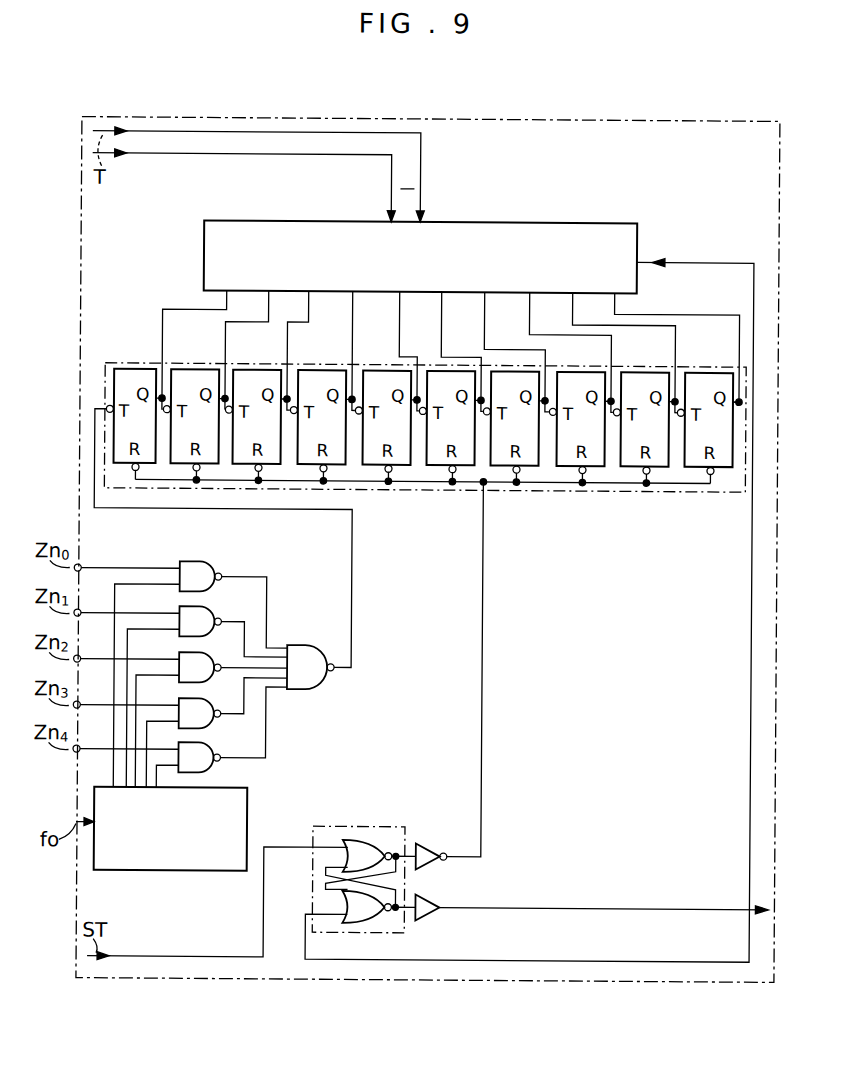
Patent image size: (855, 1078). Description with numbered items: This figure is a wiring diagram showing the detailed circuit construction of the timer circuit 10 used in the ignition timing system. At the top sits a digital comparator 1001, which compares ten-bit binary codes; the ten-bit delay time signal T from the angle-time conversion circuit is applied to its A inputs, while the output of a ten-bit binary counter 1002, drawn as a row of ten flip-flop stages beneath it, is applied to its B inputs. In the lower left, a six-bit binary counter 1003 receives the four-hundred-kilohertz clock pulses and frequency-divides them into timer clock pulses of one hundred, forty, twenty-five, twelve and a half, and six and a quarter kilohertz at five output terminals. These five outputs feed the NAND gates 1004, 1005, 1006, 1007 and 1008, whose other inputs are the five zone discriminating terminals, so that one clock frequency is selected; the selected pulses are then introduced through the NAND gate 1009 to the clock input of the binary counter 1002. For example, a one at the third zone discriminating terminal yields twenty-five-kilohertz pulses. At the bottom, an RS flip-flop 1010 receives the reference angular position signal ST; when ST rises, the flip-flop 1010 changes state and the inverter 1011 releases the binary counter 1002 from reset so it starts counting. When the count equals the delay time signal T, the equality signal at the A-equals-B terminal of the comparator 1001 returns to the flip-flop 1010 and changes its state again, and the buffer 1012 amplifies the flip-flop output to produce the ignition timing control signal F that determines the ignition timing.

The timer circuit 10 is at (592, 119).
The digital comparator 1001 is at (550, 222).
The 10-bit binary counter 1002 is at (585, 491).
The 6-bit binary counter 1003 is at (249, 806).
The NAND gate 1004 is at (205, 553).
The NAND gate 1005 is at (213, 596).
The NAND gate 1006 is at (183, 655).
The NAND gate 1007 is at (203, 728).
The NAND gate 1008 is at (214, 772).
The NAND gate 1009 is at (312, 689).
The RS flip-flop 1010 is at (355, 827).
The inverter 1011 is at (434, 844).
The buffer 1012 is at (437, 884).